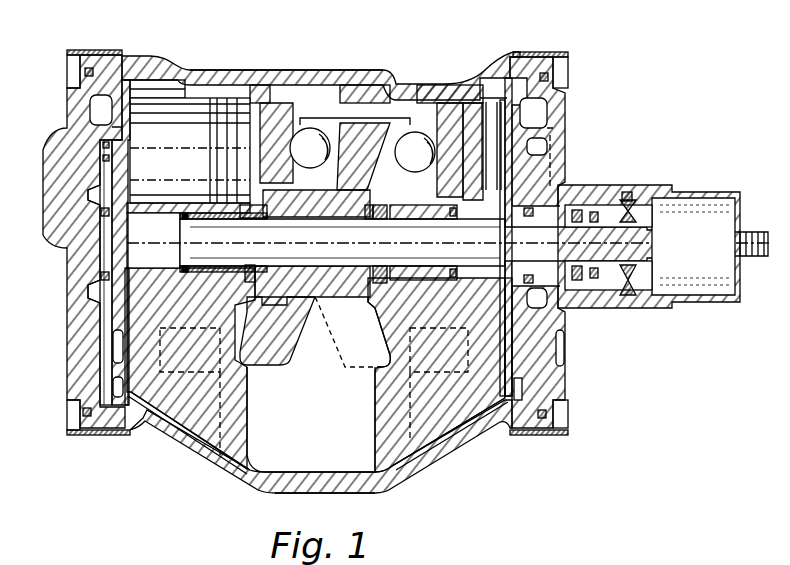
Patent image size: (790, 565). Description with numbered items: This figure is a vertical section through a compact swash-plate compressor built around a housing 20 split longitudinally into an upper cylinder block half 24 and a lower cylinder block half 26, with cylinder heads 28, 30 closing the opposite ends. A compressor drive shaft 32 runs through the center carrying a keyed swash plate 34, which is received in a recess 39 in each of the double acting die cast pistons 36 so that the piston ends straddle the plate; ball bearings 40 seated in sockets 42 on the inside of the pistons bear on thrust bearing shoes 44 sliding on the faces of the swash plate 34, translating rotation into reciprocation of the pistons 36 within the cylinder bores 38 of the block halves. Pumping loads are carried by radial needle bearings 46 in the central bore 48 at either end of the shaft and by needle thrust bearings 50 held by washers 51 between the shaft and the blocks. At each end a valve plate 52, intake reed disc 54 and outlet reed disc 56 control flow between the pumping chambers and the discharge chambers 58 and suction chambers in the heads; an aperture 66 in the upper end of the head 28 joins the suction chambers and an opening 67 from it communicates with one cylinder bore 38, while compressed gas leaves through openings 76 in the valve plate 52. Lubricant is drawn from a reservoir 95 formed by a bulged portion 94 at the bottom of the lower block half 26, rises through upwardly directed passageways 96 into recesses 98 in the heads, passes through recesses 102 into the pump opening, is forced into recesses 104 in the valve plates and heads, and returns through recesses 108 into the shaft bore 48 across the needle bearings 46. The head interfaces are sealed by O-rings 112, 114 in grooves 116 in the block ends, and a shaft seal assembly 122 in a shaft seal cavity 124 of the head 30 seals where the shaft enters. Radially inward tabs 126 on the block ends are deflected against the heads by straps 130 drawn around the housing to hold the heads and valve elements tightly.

The housing 20 is at (322, 70).
The upper cylinder block half 24 is at (408, 86).
The lower cylinder block half 26 is at (445, 418).
The cylinder head 28 is at (67, 378).
The cylinder head 30 is at (567, 375).
The compressor drive shaft 32 is at (527, 254).
The swash plate 34 is at (290, 335).
The double acting die cast pistons 36 is at (245, 107).
The cylinder bores 38 is at (465, 103).
The recess 39 is at (337, 118).
The ball bearings 40 is at (290, 190).
The sockets 42 is at (296, 140).
The thrust bearing shoes 44 is at (325, 180).
The radial needle bearings 46 is at (195, 268).
The bore 48 is at (185, 222).
The needle thrust bearings 50 is at (263, 270).
The washers 51 is at (247, 226).
The valve plate 52 is at (115, 316).
The intake reed disc 54 is at (140, 96).
The outlet reed disc 56 is at (105, 303).
The discharge chambers 58 is at (98, 200).
The aperture 66 is at (92, 116).
The opening 67 is at (128, 124).
The openings 76 is at (130, 167).
The bulged portion 94 is at (317, 493).
The lubricant reservoir 95 is at (302, 432).
The upwardly directed passageways 96 is at (213, 445).
The recesses 98 is at (125, 392).
The recesses 102 is at (135, 370).
The recesses 104 is at (115, 345).
The recesses 108 is at (130, 296).
The O-ring 112 is at (87, 416).
The O-ring 114 is at (540, 418).
The grooves 116 is at (91, 68).
The shaft seal assembly 122 is at (650, 186).
The shaft seal cavity 124 is at (598, 285).
The tabs 126 is at (73, 73).
The straps 130 is at (83, 50).